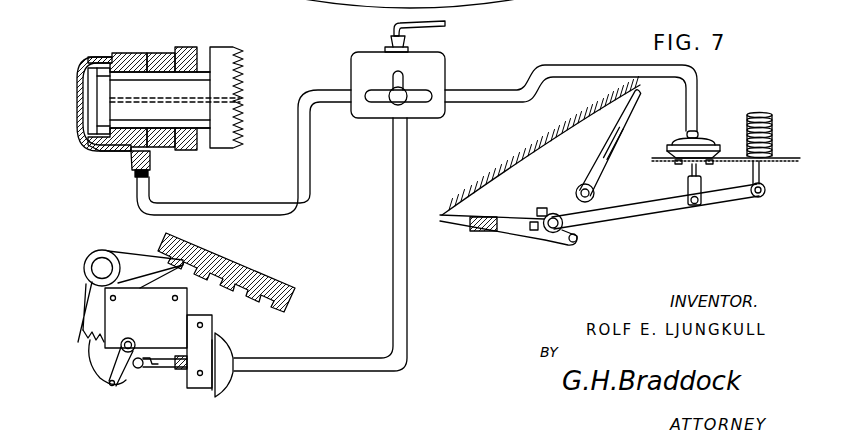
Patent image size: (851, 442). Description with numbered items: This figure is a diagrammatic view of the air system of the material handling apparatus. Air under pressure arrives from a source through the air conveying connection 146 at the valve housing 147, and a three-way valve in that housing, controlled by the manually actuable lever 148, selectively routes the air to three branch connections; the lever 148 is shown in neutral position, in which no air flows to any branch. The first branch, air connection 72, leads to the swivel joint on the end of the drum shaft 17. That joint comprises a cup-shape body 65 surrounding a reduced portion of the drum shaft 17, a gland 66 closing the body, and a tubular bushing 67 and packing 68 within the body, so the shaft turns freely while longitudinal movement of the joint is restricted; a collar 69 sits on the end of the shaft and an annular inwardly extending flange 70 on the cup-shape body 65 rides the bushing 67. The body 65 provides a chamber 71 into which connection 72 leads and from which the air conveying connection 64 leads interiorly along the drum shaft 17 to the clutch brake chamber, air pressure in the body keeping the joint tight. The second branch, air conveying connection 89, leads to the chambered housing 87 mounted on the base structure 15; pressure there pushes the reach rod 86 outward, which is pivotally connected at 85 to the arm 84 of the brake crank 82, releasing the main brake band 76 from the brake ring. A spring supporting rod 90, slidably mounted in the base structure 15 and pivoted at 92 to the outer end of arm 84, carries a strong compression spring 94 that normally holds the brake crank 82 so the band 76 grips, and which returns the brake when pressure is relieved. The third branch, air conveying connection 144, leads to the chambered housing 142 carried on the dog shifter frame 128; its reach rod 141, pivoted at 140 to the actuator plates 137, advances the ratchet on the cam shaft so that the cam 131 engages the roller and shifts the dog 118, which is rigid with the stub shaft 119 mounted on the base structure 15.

The base structure 15 is at (782, 161).
The drum shaft 17 is at (226, 76).
The air conveying connection 64 is at (226, 100).
The cup-shape body 65 is at (136, 55).
The gland 66 is at (188, 48).
The tubular bushing 67 is at (118, 57).
The packing 68 is at (163, 54).
The collar 69 is at (94, 133).
The annular inwardly extending flange 70 is at (104, 123).
The chamber 71 is at (82, 138).
The air connection 72 is at (254, 202).
The main brake band 76 is at (614, 140).
The brake crank 82 is at (590, 221).
The arm 84 is at (720, 196).
The pivotal connection 85 is at (693, 205).
The reach rod 86 is at (688, 181).
The chambered housing 87 is at (705, 139).
The air conveying connection 89 is at (600, 75).
The spring supporting rod 90 is at (753, 176).
The pivotal connection 92 is at (759, 198).
The strong compression spring 94 is at (760, 113).
The dog 118 is at (147, 262).
The stub shaft 119 is at (100, 267).
The dog shifter frame 128 is at (158, 338).
The cam 131 is at (105, 353).
The actuator plates 137 is at (121, 378).
The pivotal connection 140 is at (139, 368).
The reach rod 141 is at (164, 368).
The chambered housing 142 is at (227, 375).
The air conveying connection 144 is at (393, 205).
The air conveying connection 146 is at (396, 25).
The valve housing 147 is at (446, 106).
The manually actuable lever 148 is at (420, 63).